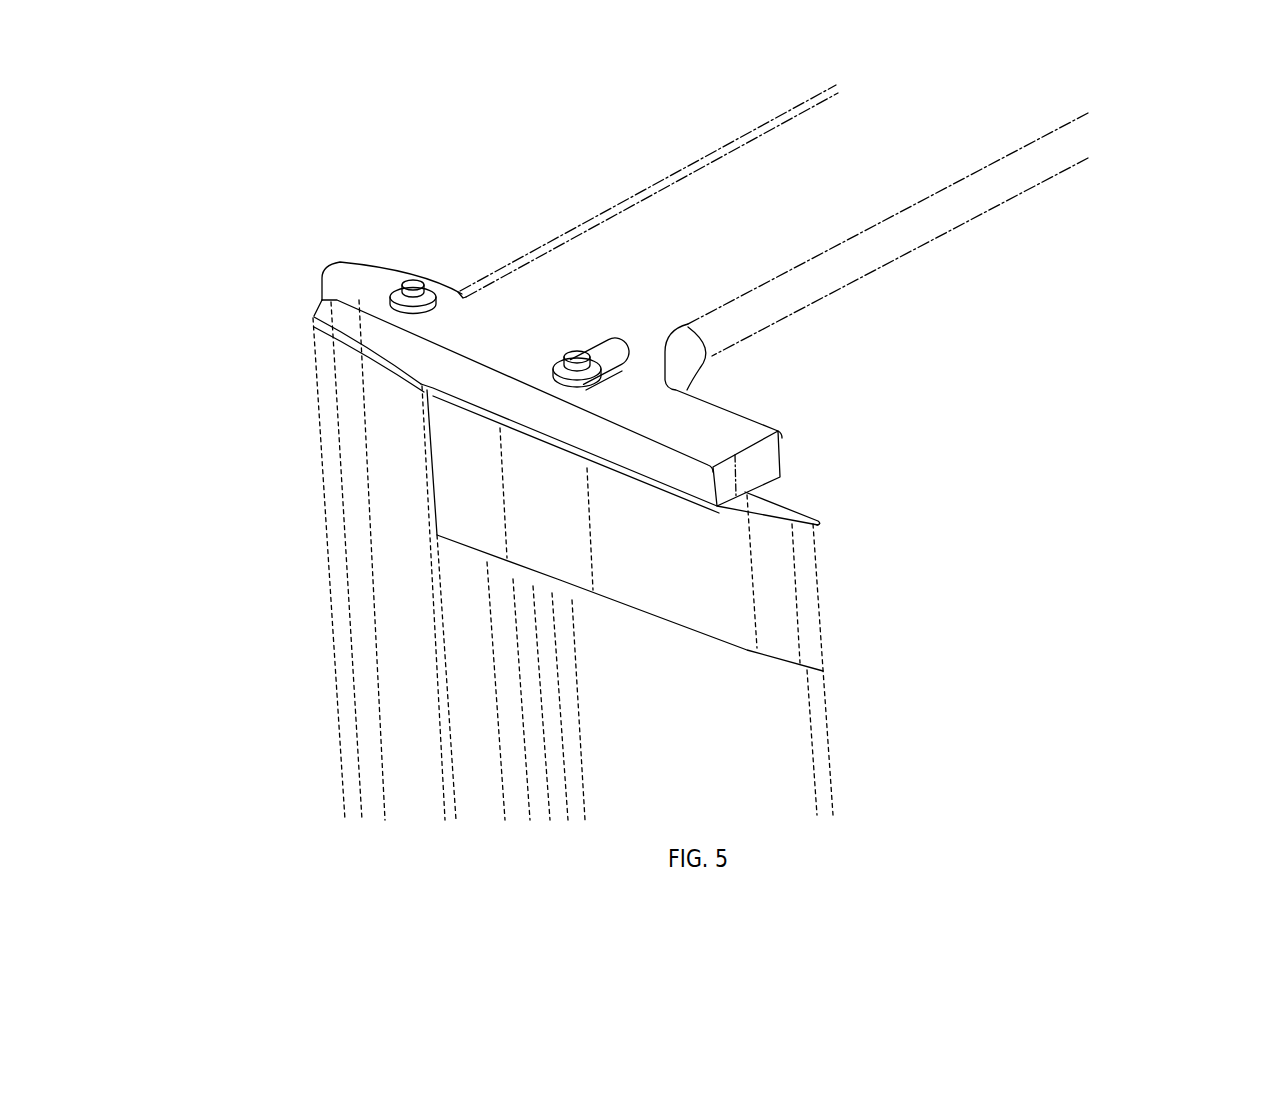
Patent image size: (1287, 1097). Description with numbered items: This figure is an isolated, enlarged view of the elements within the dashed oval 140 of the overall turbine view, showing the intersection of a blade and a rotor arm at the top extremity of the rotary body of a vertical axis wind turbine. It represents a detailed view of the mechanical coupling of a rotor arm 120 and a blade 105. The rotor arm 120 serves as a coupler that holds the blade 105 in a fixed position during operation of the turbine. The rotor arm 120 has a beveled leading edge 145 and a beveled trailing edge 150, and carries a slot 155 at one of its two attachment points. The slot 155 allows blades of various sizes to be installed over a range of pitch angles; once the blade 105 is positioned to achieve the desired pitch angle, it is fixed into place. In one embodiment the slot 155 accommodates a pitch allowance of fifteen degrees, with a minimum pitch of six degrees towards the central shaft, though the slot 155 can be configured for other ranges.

The blade 105 is at (383, 528).
The rotor arm 120 is at (748, 190).
The dashed oval 140 is at (712, 441).
The beveled leading edge 145 is at (337, 302).
The beveled trailing edge 150 is at (720, 488).
The slot 155 is at (603, 345).